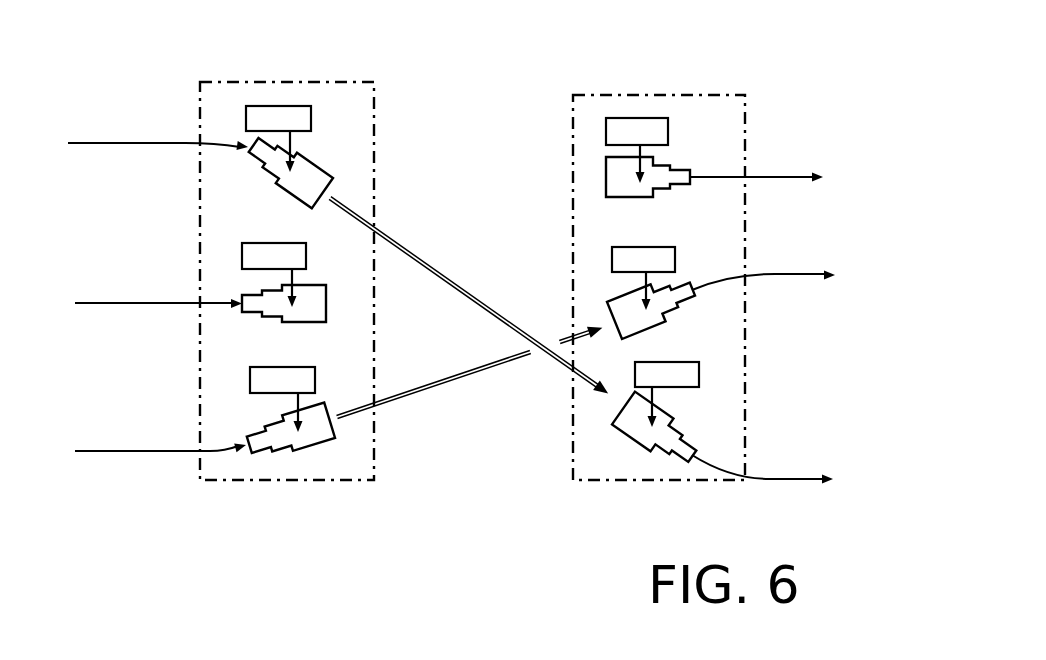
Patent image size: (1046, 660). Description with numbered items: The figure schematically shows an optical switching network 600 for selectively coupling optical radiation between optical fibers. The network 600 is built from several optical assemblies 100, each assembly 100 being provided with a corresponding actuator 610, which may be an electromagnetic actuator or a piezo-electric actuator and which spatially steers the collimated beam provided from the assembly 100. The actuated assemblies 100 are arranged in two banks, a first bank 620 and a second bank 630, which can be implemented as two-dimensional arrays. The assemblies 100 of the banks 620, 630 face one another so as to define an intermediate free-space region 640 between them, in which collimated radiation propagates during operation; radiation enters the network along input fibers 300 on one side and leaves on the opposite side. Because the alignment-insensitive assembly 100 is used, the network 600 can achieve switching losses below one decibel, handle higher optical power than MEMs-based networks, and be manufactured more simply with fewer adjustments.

The optical assembly 100 is at (318, 435).
The supply line 300 is at (122, 453).
The optical switching network 600 is at (490, 58).
The actuator 610 is at (270, 382).
The first bank 620 is at (281, 76).
The second bank 630 is at (635, 485).
The intermediate free-space region 640 is at (489, 221).